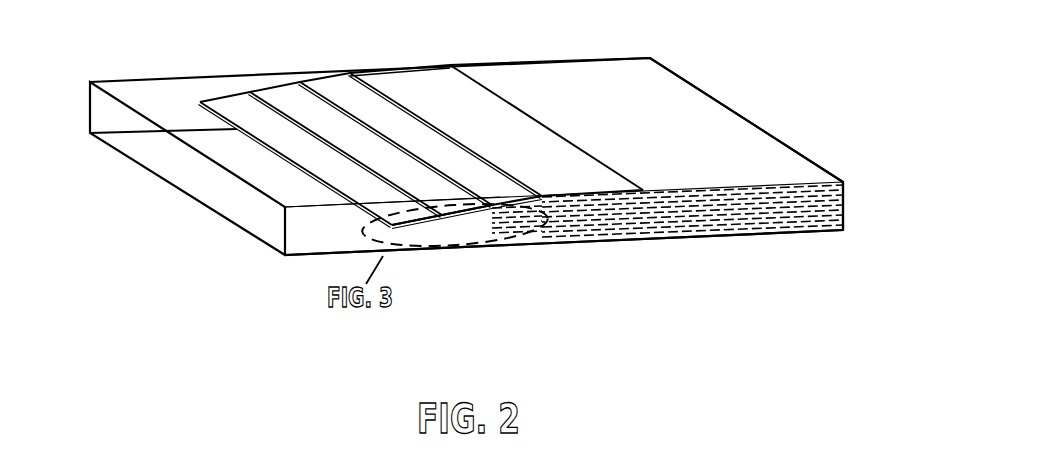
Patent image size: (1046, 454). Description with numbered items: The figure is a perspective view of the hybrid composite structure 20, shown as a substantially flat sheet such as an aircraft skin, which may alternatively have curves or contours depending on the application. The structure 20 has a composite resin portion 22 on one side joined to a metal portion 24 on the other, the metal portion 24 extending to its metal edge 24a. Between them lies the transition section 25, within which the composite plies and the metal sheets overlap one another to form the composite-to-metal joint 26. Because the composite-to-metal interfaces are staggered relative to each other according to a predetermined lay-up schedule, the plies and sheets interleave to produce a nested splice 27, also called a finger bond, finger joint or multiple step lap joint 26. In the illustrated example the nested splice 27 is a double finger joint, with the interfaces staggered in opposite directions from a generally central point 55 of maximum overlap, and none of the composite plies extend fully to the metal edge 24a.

The hybrid composite structure 20 is at (185, 231).
The composite resin portion 22 is at (440, 60).
The metal portion 24 is at (638, 48).
The metal edge 24a is at (818, 138).
The transition section 25 is at (657, 251).
The composite-to-metal joint 26 is at (452, 290).
The nested splice 27 is at (437, 256).
The central point of maximum overlap 55 is at (357, 209).